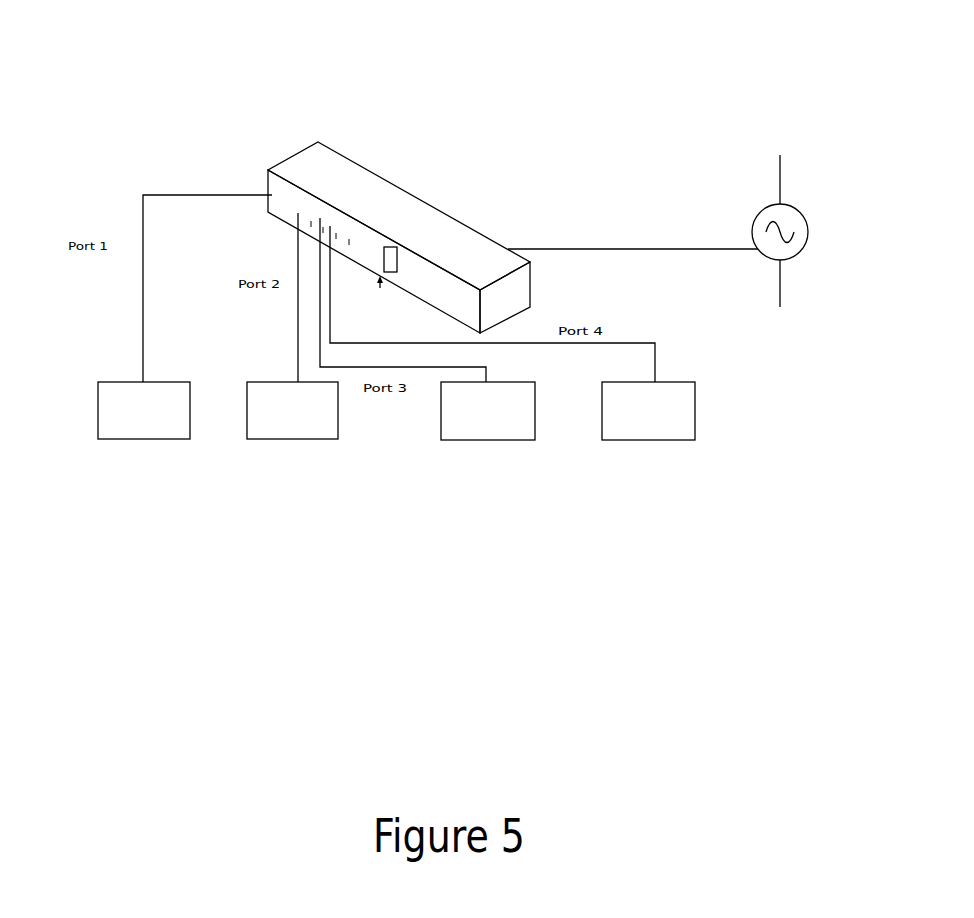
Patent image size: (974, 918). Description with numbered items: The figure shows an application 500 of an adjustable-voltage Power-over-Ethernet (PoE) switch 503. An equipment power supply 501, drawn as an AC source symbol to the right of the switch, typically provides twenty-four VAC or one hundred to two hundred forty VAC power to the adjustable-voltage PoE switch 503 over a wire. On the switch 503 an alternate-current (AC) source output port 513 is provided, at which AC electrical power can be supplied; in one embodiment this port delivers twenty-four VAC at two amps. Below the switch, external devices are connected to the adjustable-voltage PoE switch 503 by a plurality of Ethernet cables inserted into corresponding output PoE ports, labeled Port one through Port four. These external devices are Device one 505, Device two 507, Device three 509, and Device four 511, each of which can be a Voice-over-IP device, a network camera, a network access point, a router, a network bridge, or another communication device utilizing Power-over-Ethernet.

The application 500 is at (448, 578).
The equipment power supply 501 is at (723, 176).
The adjustable-voltage Power-over-Ethernet (PoE) switch 503 is at (399, 237).
The Device 1 505 is at (143, 438).
The Device 2 507 is at (295, 438).
The Device 3 509 is at (490, 438).
The Device 4 511 is at (650, 438).
The alternate-current (AC) source output port 513 is at (397, 250).